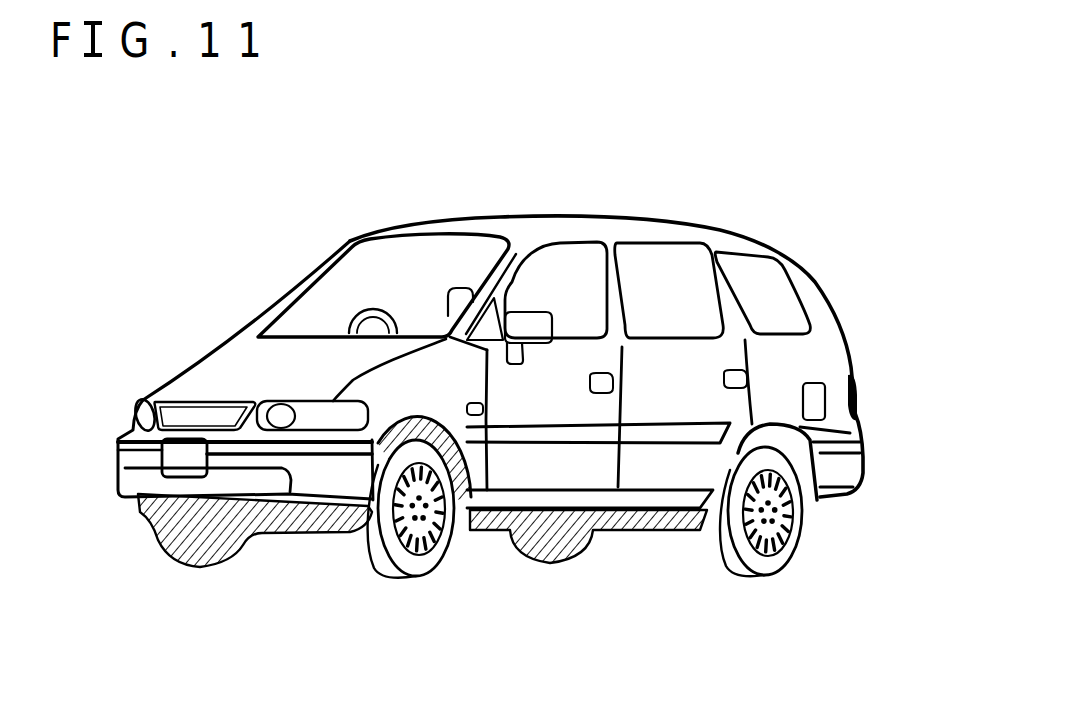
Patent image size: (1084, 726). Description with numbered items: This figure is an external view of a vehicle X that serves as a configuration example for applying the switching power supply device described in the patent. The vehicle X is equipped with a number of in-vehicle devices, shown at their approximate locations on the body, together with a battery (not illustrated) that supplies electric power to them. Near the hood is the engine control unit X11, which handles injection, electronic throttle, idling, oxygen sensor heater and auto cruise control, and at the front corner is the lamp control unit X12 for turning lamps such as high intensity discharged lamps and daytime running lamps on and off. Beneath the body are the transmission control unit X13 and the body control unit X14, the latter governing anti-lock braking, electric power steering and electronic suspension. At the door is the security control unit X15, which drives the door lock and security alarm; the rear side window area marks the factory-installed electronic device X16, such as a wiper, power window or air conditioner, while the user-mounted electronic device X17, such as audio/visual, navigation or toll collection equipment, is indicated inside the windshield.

The vehicle X is at (98, 155).
The engine control unit X11 is at (237, 370).
The lamp control unit X12 is at (137, 407).
The transmission control unit X13 is at (353, 528).
The body control unit X14 is at (697, 528).
The security control unit X15 is at (750, 381).
The electronic device incorporated as standard equipment or manufacturer's option X16 is at (678, 263).
The electronic device optionally mounted by the user X17 is at (412, 318).